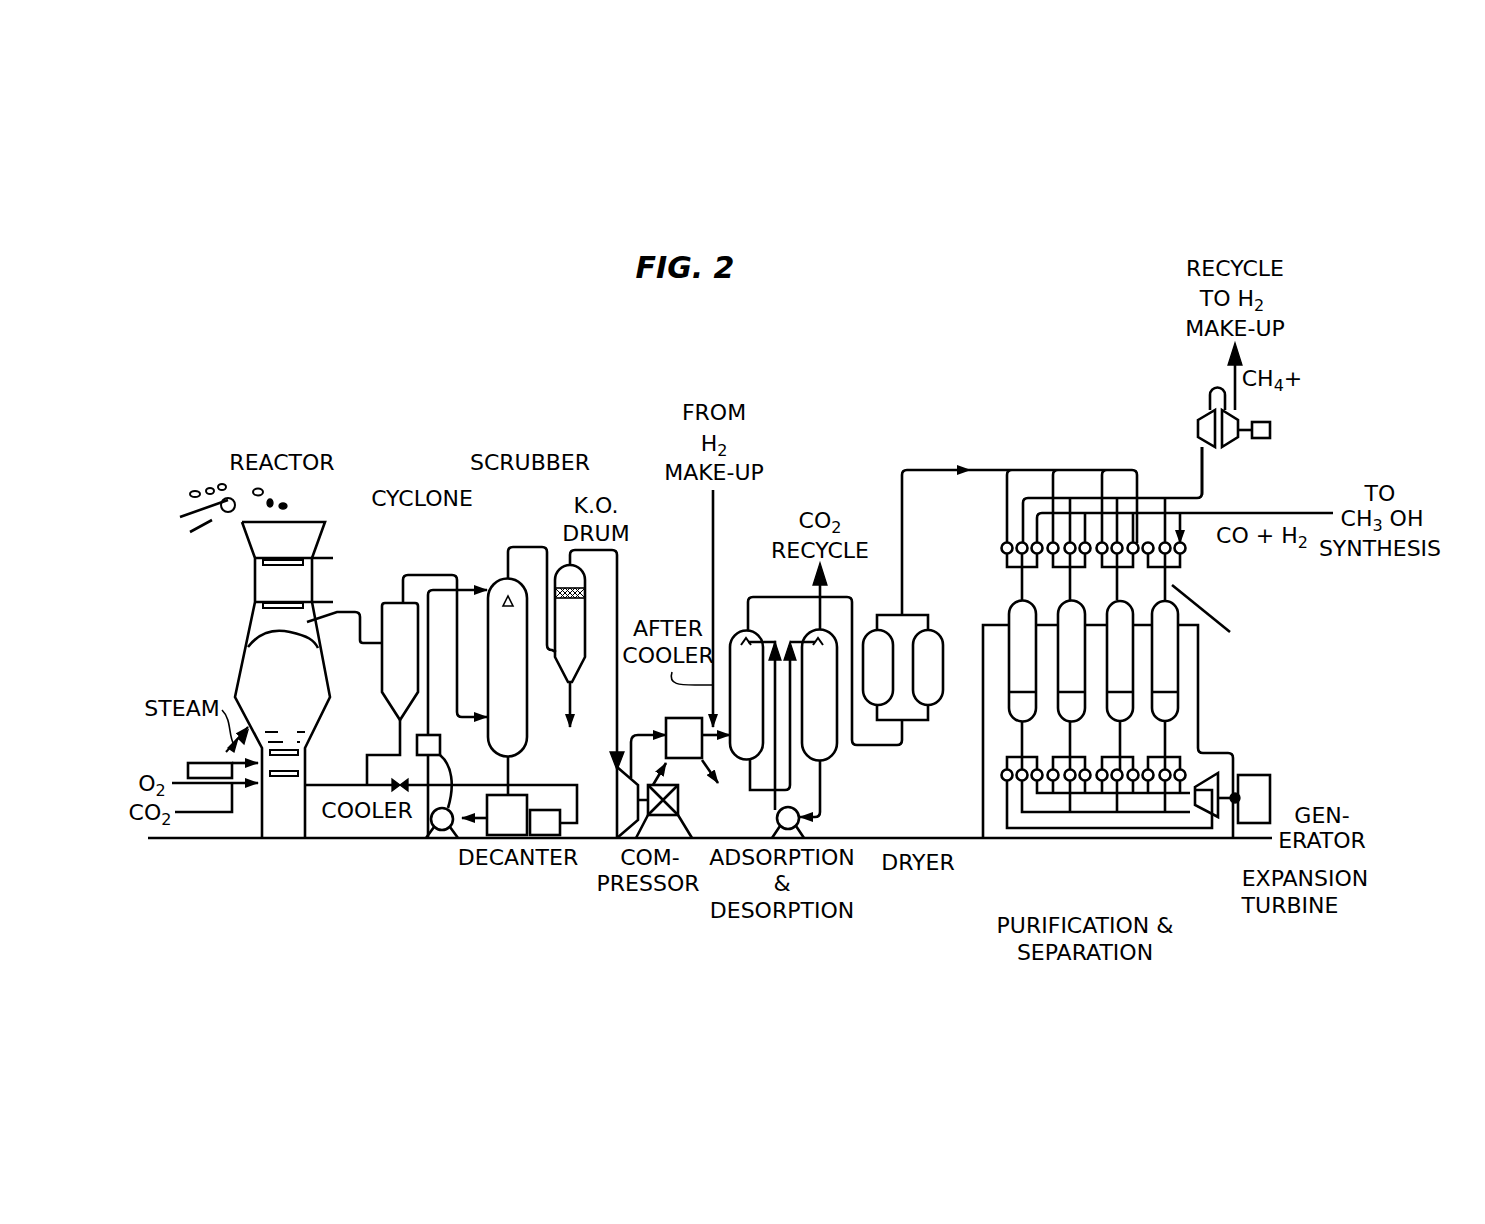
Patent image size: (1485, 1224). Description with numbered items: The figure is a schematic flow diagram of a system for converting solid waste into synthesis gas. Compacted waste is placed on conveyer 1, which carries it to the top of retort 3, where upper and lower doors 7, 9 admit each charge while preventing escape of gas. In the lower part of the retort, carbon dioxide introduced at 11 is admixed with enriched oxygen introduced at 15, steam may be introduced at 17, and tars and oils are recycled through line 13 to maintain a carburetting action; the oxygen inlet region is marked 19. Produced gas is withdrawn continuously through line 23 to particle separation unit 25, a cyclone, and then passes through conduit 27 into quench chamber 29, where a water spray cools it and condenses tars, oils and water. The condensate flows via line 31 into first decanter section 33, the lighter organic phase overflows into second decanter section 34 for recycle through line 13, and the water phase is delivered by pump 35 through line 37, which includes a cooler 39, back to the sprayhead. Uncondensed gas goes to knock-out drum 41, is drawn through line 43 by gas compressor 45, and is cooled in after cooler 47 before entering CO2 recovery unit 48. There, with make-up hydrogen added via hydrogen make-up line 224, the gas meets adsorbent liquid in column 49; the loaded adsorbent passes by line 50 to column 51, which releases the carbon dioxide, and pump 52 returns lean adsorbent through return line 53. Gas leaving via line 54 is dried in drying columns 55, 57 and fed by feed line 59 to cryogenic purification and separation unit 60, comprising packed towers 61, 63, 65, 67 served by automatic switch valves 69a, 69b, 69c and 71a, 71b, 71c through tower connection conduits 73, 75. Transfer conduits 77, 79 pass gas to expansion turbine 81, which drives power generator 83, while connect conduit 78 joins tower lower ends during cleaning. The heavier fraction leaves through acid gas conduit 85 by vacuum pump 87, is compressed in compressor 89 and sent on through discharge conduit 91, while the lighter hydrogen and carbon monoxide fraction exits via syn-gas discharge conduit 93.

The conveyer 1 is at (203, 533).
The retort 3 is at (240, 630).
The upper door 7 is at (278, 558).
The lower door 9 is at (272, 602).
The carbon dioxide line 11 is at (208, 838).
The recycle line 13 is at (330, 785).
The oxygen line 15 is at (232, 812).
The steam inlet 17 is at (208, 710).
The oxygen inlet 19 is at (232, 812).
The gas withdrawal line 23 is at (340, 608).
The particle separation unit 25 is at (392, 694).
The conduit 27 is at (428, 572).
The quench chamber 29 is at (507, 668).
The line 31 is at (510, 780).
The first decanter section 33 is at (494, 815).
The second decanter section 34 is at (545, 823).
The pump 35 is at (444, 830).
The line 37 is at (430, 708).
The cooler / line to knock-out drum 39 is at (420, 758).
The knock-out drum 41 is at (570, 646).
The line 43 is at (620, 592).
The gas compressor 45 is at (623, 800).
The after cooler 47 is at (698, 715).
The CO2 recovery unit 48 is at (740, 585).
The adsorption/desorption column 49 is at (755, 720).
The line 50 is at (772, 793).
The adsorption/desorption column 51 is at (793, 676).
The pump 52 is at (812, 817).
The return line 53 is at (772, 765).
The line 54 is at (836, 597).
The drying column 55 is at (895, 667).
The drying column 57 is at (928, 667).
The feed line 59 is at (930, 470).
The cryogenic gas purification and separation unit 60 is at (1225, 693).
The packed tower 61 is at (1022, 661).
The packed tower 63 is at (1072, 661).
The packed tower 65 is at (1120, 661).
The packed tower 67 is at (1165, 661).
The automatic switch valve 69a is at (1094, 572).
The automatic switch valve 69b is at (1007, 548).
The automatic switch valve 69c is at (1205, 568).
The automatic switch valve 71a is at (1093, 746).
The automatic switch valve 71b is at (1150, 781).
The automatic switch valve 71c is at (1178, 781).
The tower connection conduit 73 is at (1010, 612).
The tower connection conduit 75 is at (1020, 757).
The transfer conduit 77 is at (1170, 815).
The connect conduit 78 is at (1180, 820).
The transfer conduit 79 is at (1203, 753).
The expansion turbine 81 is at (1205, 830).
The power generator 83 is at (1272, 795).
The acid gas conduit 85 is at (1198, 482).
The vacuum pump 87 is at (1200, 420).
The compressor 89 is at (1232, 447).
The discharge conduit 91 is at (1233, 373).
The syn-gas discharge conduit 93 is at (1283, 513).
The hydrogen make-up line 224 is at (712, 540).